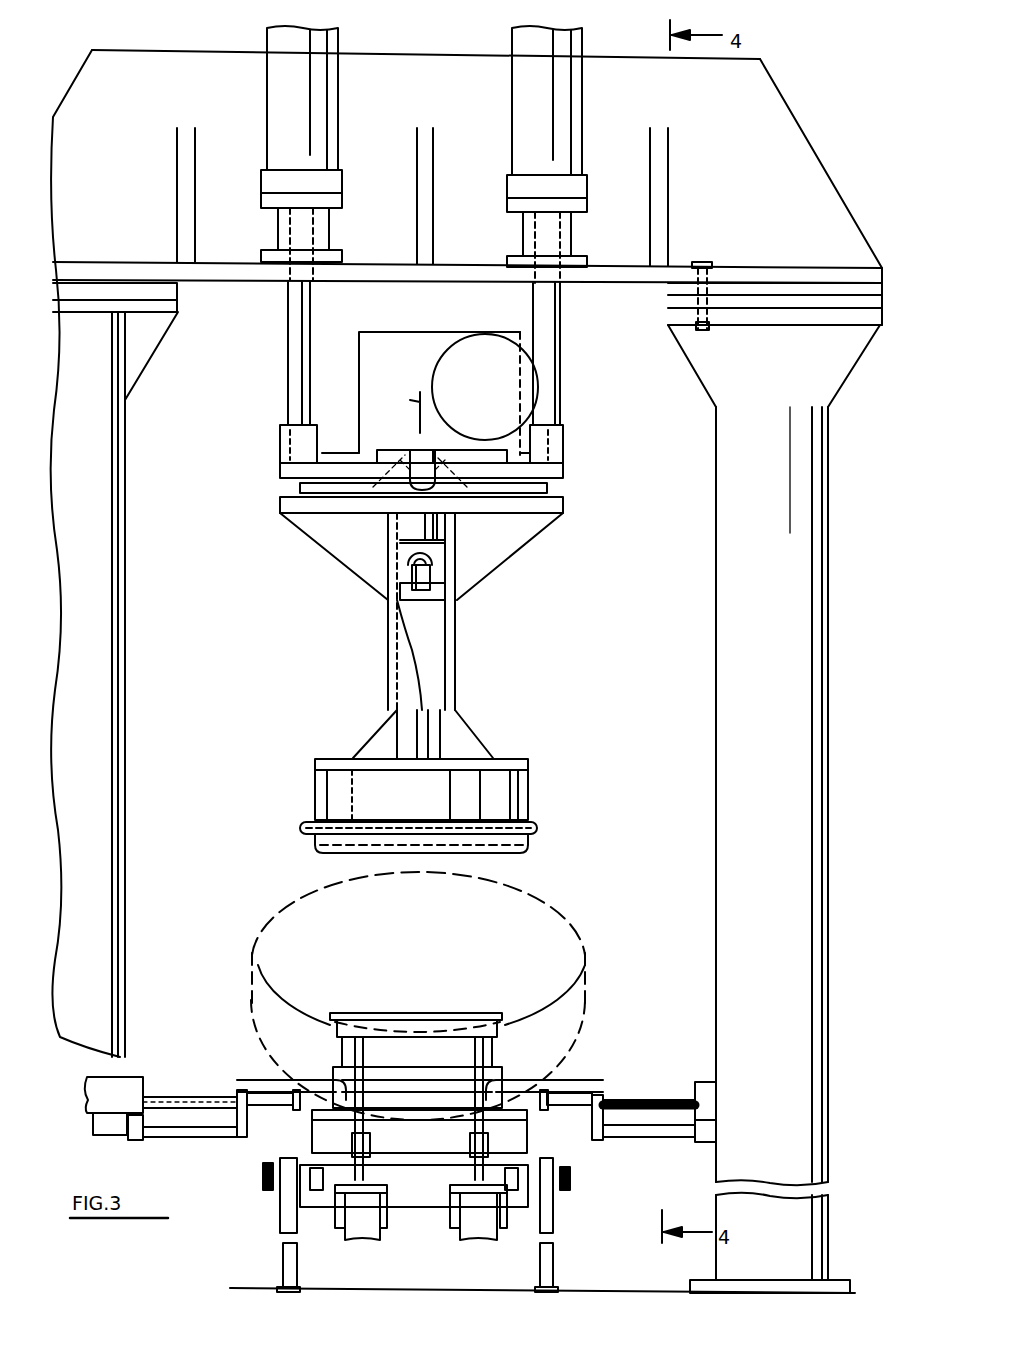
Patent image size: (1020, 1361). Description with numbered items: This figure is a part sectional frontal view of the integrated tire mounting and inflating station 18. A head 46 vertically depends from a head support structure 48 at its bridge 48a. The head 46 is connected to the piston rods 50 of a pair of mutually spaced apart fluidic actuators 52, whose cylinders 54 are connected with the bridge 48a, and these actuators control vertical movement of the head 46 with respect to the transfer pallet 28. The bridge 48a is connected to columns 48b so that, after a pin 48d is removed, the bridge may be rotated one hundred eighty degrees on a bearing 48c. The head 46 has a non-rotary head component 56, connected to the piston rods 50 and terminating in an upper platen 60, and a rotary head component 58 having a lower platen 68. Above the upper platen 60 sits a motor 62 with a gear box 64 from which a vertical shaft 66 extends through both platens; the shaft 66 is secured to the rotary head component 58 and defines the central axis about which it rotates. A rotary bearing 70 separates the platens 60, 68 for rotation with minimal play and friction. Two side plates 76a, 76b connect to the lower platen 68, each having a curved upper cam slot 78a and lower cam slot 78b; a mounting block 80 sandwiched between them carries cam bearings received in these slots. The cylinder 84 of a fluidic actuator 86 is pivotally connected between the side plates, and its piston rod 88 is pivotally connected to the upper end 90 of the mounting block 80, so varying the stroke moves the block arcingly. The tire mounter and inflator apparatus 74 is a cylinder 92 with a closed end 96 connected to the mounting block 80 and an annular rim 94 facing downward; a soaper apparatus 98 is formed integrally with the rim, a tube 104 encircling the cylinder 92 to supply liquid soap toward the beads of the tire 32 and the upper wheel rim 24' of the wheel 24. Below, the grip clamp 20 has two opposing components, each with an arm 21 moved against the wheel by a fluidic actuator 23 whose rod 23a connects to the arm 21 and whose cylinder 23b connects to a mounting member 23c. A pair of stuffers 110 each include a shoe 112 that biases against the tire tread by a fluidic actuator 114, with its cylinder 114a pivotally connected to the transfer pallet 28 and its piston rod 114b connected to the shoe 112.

The integrated tire mounting and inflating station 18 is at (620, 513).
The grip clamp 20 is at (207, 1056).
The arm 21 is at (275, 1080).
The fluidic actuator 23 is at (194, 1135).
The rod 23a is at (279, 1108).
The cylinder 23b is at (152, 1138).
The mounting member 23c is at (112, 1077).
The wheel 24 is at (438, 1060).
The upper wheel rim 24' is at (431, 1003).
The transfer pallet 28 is at (530, 1139).
The tire 32 is at (588, 995).
The head 46 is at (538, 585).
The head support structure 48 is at (786, 86).
The bridge 48a is at (806, 142).
The columns 48b is at (125, 693).
The bearing 48c is at (150, 293).
The pin 48d is at (710, 264).
The piston rods 50 is at (313, 312).
The fluidic actuators 52 is at (350, 167).
The cylinders 54 is at (505, 50).
The non-rotary head component 56 is at (327, 392).
The rotary head component 58 is at (333, 560).
The upper platen 60 is at (563, 478).
The motor 62 is at (537, 378).
The gear box 64 is at (358, 377).
The vertical shaft 66 is at (416, 448).
The lower platen 68 is at (565, 500).
The rotary bearing 70 is at (300, 487).
The tire mounter and inflator apparatus 74 is at (304, 784).
The side plate 76a is at (456, 686).
The side plate 76b is at (385, 654).
The upper cam slot 78a is at (388, 613).
The lower cam slot 78b is at (389, 691).
The mounting block 80 is at (456, 660).
The cylinder 84 is at (410, 553).
The fluidic actuator 86 is at (403, 582).
The piston rod 88 is at (432, 562).
The upper end 90 is at (430, 580).
The cylinder 92 is at (530, 797).
The annular rim 94 is at (526, 851).
The closed end 96 is at (514, 764).
The soaper apparatus 98 is at (302, 843).
The tube 104 is at (540, 829).
The stuffers 110 is at (416, 1185).
The shoe 112 is at (452, 1087).
The fluidic actuator 114 is at (326, 1226).
The cylinder 114a is at (387, 1237).
The piston rod 114b is at (470, 1165).